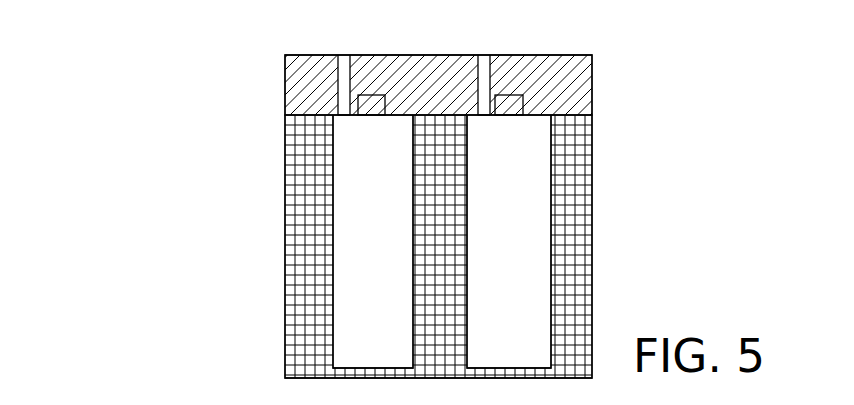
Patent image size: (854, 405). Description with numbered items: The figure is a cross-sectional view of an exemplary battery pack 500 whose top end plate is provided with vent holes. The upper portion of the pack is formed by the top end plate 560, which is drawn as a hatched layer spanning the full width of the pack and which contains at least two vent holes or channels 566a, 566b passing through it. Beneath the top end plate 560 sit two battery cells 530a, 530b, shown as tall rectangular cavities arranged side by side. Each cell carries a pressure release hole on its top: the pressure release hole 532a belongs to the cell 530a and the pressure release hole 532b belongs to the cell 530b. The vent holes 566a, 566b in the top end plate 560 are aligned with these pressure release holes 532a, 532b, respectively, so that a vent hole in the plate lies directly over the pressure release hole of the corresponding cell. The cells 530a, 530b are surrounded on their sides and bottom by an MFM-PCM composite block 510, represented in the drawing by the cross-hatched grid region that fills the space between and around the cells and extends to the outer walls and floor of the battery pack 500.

The battery pack 500 is at (192, 258).
The MFM-PCM composite block 510 is at (588, 247).
The cell 530a is at (406, 229).
The cell 530b is at (543, 229).
The pressure release hole 532a is at (345, 117).
The pressure release hole 532b is at (480, 117).
The top end plate 560 is at (586, 85).
The vent hole 566a is at (338, 72).
The vent hole 566b is at (492, 66).